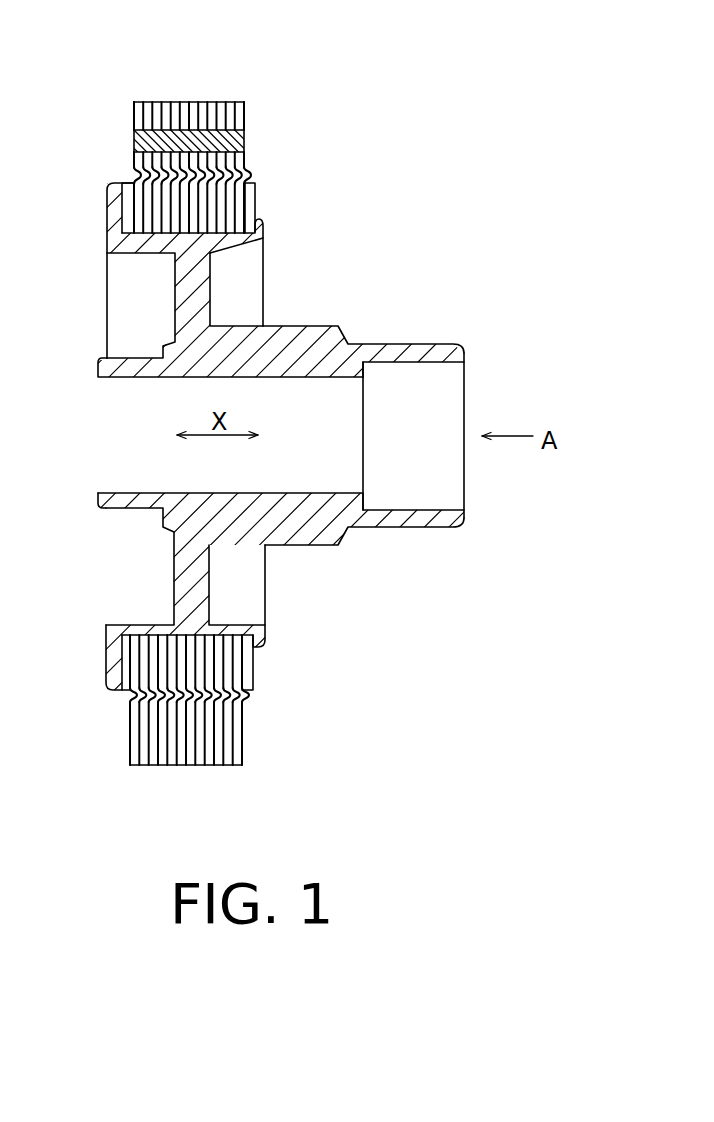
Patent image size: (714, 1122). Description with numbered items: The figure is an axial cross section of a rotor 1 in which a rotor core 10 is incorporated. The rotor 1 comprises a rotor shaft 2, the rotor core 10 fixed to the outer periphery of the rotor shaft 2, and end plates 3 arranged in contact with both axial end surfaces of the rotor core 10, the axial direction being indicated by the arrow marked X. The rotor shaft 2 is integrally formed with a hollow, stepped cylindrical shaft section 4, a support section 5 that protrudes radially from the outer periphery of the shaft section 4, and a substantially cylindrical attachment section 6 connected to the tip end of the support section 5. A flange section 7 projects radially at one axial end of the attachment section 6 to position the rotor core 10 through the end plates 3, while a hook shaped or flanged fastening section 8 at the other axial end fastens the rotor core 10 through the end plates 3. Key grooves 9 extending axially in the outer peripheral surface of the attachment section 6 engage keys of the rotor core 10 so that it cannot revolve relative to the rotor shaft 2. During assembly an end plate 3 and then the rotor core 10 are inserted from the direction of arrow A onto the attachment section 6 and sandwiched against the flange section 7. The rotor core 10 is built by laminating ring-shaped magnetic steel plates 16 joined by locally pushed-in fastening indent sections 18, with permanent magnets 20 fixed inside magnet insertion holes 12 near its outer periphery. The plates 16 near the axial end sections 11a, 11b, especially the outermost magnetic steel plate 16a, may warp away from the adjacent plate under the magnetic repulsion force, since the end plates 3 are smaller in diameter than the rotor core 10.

The rotor 1 is at (358, 120).
The rotor shaft 2 is at (464, 344).
The end plates 3 is at (137, 177).
The shaft section 4 is at (297, 325).
The support section 5 is at (212, 287).
The attachment section 6 is at (143, 253).
The flange section 7 is at (107, 209).
The fastening section 8 is at (263, 226).
The key grooves 9 is at (138, 638).
The rotor core 10 is at (186, 103).
The axial direction end section 11a is at (134, 113).
The axial direction end section 11b is at (245, 120).
The magnet insertion holes 12 is at (137, 138).
The magnetic steel plates 16 is at (210, 117).
The magnetic steel plate 16a is at (137, 103).
The fastening indent sections 18 is at (137, 170).
The permanent magnets 20 is at (244, 142).